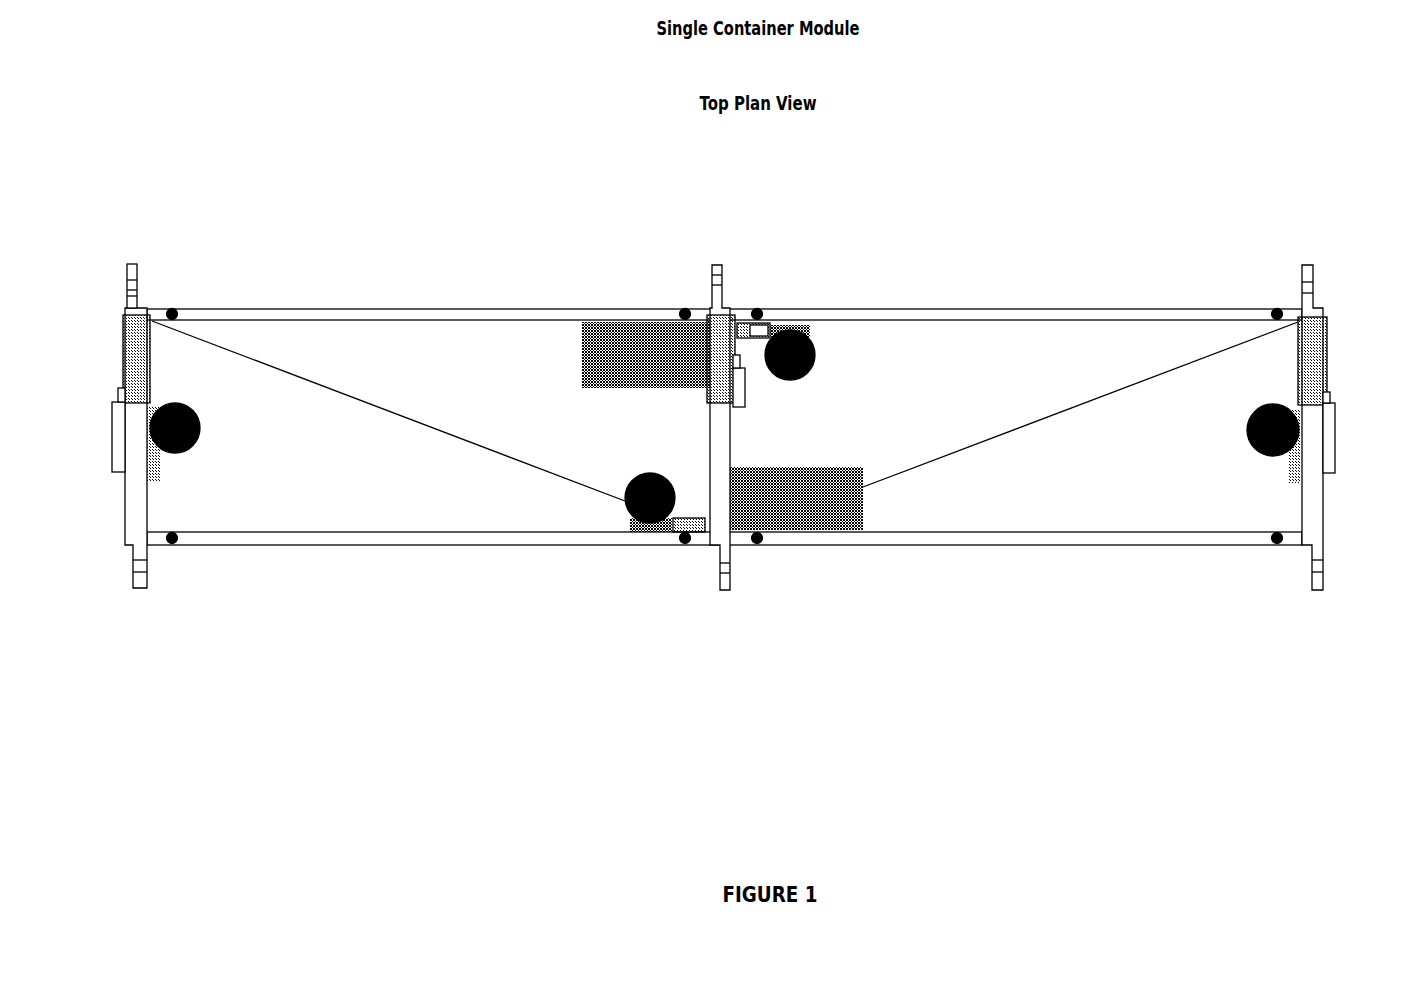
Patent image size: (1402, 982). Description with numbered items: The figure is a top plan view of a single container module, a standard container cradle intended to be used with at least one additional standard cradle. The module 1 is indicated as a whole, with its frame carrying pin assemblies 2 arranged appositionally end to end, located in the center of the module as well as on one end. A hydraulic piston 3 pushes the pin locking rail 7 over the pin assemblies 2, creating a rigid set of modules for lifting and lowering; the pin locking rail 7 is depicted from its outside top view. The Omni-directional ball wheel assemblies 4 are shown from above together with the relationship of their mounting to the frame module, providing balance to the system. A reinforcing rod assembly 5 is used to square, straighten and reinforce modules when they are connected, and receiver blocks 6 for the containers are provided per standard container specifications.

The module 1 is at (132, 263).
The pin assemblies 2 is at (722, 275).
The hydraulic piston 3 is at (1337, 472).
The Omni-directional ball wheel assemblies 4 is at (787, 397).
The reinforcing rod assembly 5 is at (472, 445).
The receiver blocks 6 is at (172, 543).
The pin locking rail 7 is at (135, 378).